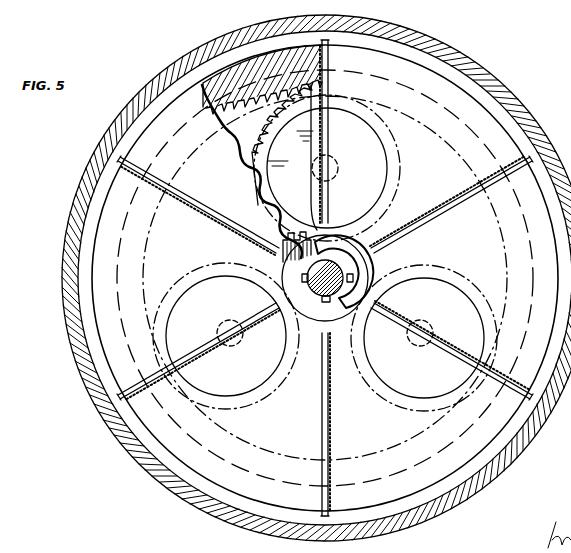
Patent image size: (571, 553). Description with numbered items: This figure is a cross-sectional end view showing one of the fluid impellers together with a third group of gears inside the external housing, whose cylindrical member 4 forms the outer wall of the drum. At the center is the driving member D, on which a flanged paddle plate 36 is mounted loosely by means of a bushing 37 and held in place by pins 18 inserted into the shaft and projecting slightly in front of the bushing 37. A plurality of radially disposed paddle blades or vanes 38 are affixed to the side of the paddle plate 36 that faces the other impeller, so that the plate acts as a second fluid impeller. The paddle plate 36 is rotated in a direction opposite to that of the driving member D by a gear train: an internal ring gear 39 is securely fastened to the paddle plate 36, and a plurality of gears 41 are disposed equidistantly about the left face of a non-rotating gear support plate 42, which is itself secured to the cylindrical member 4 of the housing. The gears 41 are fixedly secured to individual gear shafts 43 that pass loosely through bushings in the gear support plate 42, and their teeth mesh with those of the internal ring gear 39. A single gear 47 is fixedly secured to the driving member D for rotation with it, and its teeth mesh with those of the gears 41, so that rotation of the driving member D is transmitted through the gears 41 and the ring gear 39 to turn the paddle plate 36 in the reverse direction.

The cylindrical member 4 is at (490, 82).
The gear support plate 42 is at (515, 118).
The flanged paddle plate 36 is at (204, 112).
The internal ring gear 39 is at (254, 112).
The gears 41 is at (246, 157).
The paddle blades 38 is at (194, 221).
The gear shafts 43 is at (338, 173).
The bushing 37 is at (344, 250).
The single gear 47 is at (289, 225).
The pins 18 is at (337, 320).
The driving member D is at (332, 292).